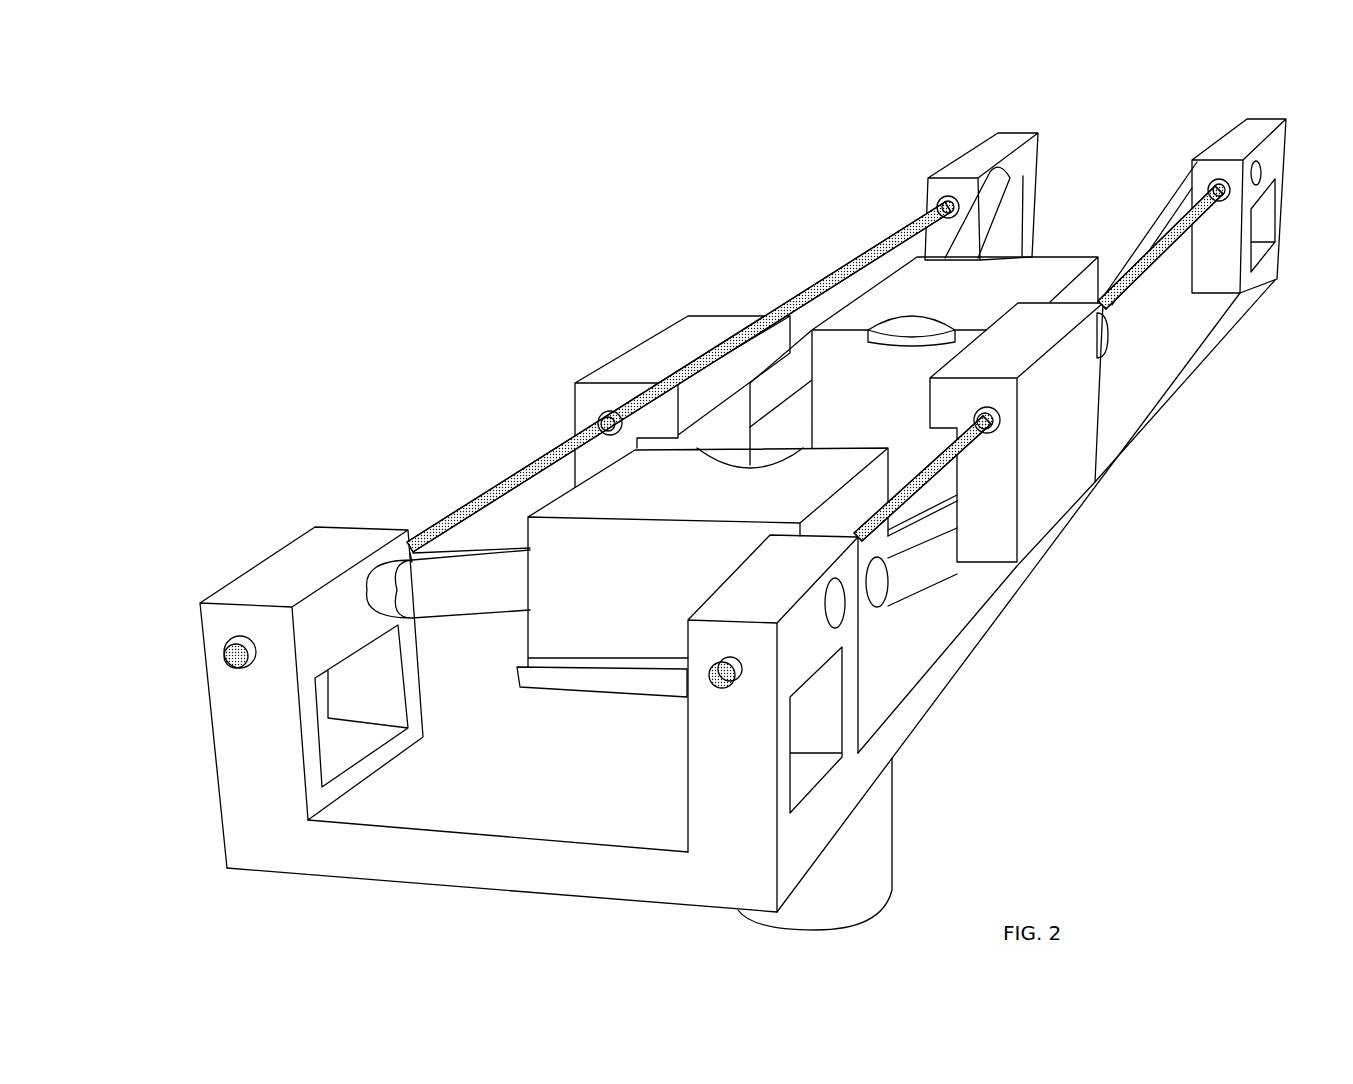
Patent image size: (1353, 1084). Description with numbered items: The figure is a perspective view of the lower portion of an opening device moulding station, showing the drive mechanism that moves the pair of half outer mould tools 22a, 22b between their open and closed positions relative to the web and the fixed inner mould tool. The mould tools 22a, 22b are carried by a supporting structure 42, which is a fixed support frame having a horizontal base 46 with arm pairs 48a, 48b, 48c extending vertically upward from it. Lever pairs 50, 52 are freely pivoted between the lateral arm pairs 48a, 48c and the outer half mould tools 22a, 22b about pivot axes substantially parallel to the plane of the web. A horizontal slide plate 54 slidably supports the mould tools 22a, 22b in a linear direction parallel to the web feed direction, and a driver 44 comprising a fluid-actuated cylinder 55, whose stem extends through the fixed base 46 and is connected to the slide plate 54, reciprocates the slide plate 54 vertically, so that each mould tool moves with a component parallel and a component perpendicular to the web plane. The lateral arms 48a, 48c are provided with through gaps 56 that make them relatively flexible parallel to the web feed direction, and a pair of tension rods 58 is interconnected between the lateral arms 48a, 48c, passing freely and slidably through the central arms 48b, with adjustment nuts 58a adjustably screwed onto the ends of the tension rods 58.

The half outer mould tool 22a is at (1040, 270).
The half outer mould tool 22b is at (635, 638).
The supporting structure 42 is at (1213, 367).
The driver 44 is at (897, 852).
The horizontal base 46 is at (1238, 318).
The lateral arm pair 48a is at (975, 158).
The central arm pair 48b is at (660, 352).
The lateral arm pair 48c is at (282, 782).
The lever pair 50 is at (1008, 188).
The lever pair 52 is at (463, 598).
The horizontal slide plate 54 is at (927, 558).
The fluid-actuated cylinder 55 is at (877, 810).
The through gaps 56 is at (817, 740).
The tension rods 58 is at (533, 468).
The adjustment nuts 58a is at (227, 660).